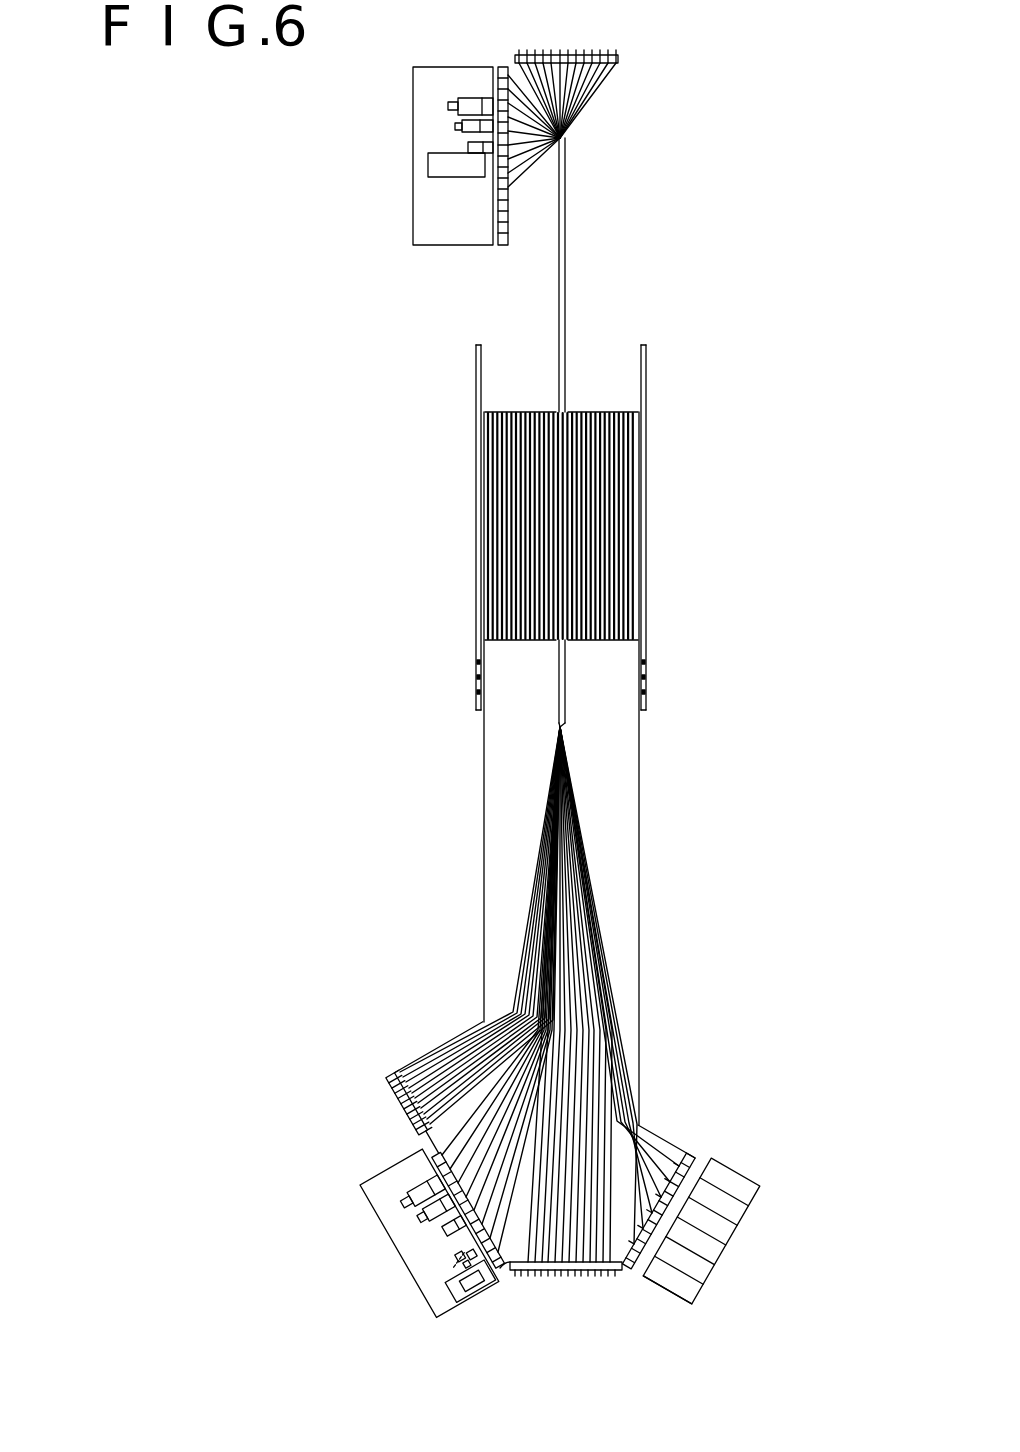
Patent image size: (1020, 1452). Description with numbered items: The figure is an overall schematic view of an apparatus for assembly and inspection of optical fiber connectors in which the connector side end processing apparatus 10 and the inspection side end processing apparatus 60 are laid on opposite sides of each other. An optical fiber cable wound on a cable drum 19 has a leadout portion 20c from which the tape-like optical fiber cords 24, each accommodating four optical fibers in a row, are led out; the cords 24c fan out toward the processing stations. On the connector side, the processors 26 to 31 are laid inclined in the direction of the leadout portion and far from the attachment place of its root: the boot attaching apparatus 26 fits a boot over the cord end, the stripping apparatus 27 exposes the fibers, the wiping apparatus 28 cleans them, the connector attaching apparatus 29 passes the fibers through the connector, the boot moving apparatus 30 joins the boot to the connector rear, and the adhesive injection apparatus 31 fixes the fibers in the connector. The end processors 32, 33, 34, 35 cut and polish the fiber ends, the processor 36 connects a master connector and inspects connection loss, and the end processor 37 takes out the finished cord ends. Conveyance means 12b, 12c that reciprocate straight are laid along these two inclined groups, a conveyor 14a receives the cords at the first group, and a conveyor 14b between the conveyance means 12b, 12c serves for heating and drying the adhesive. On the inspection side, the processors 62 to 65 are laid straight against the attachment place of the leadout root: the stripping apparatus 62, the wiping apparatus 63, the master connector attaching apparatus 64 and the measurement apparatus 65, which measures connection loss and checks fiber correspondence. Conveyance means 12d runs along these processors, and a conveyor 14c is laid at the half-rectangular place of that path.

The connector side end processing apparatus 10 is at (733, 1162).
The conveyance means 12b is at (500, 1270).
The conveyance means 12c is at (695, 1155).
The conveyance means 12d is at (508, 228).
The fiber comb 14a is at (400, 1108).
The conveyor 14b is at (562, 1280).
The conveyor 14c is at (618, 57).
The cable drum 19 is at (667, 512).
The fiber bundle rod 20c is at (557, 713).
The optical fiber cord 24 is at (397, 1083).
The fiber fan-out 24c is at (533, 817).
The boot attaching apparatus 26 is at (400, 1195).
The stripping apparatus 27 is at (417, 1218).
The wiping apparatus 28 is at (437, 1228).
The connector attaching apparatus 29 is at (447, 1238).
The boot moving apparatus 30 is at (455, 1272).
The adhesive injection apparatus 31 is at (435, 1300).
The end processor 32 is at (702, 1300).
The end processor 33 is at (705, 1288).
The end processor 34 is at (715, 1266).
The end processor 35 is at (727, 1245).
The processor 36 is at (738, 1225).
The end processor 37 is at (750, 1203).
The inspection side end processing apparatus 60 is at (598, 122).
The stripping apparatus 62 is at (448, 106).
The wiping apparatus 63 is at (455, 127).
The master connector attaching apparatus 64 is at (468, 148).
The measurement apparatus 65 is at (428, 165).